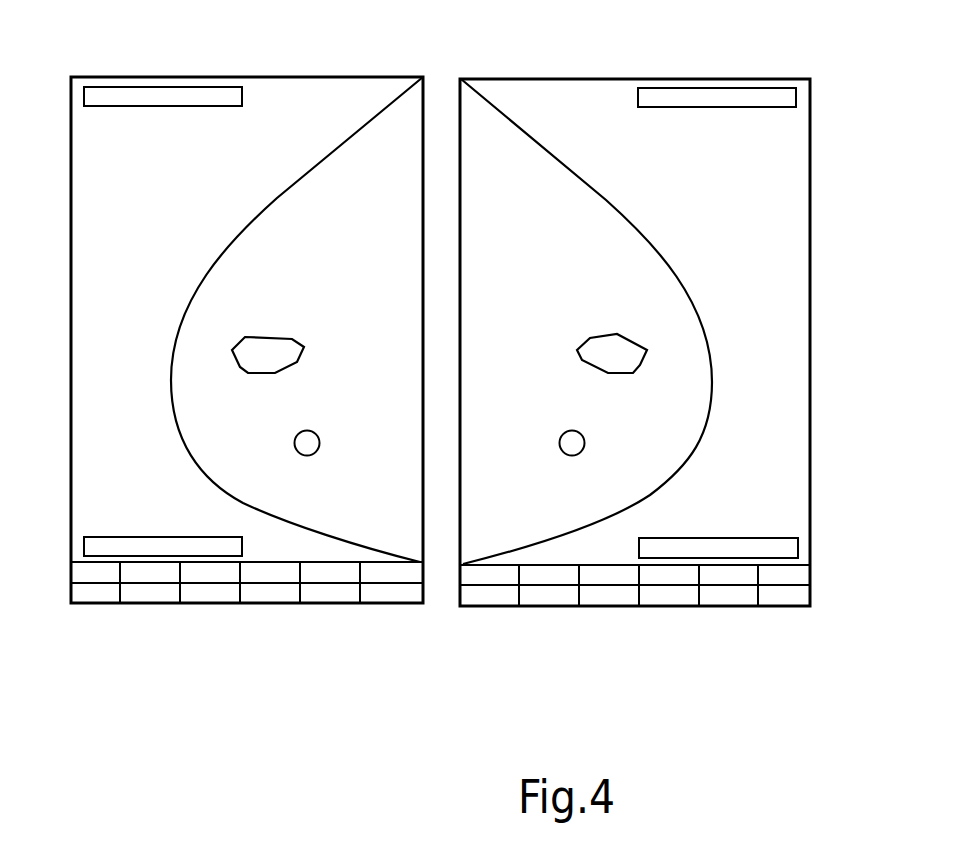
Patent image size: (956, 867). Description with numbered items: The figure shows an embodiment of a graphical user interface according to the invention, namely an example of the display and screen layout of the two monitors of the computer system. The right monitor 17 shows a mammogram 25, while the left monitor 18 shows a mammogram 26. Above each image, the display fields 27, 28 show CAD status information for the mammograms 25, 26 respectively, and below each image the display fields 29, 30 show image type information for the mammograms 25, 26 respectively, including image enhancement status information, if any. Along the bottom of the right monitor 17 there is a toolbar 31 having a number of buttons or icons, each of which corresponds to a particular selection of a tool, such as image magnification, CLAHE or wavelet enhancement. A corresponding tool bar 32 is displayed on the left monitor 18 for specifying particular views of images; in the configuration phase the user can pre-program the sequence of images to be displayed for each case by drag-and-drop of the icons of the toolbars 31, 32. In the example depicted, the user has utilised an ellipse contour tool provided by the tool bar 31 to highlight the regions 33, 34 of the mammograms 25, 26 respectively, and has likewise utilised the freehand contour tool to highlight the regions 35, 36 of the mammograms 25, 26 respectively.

The right monitor 17 is at (537, 79).
The left monitor 18 is at (283, 78).
The mammogram 25 is at (545, 150).
The mammogram 26 is at (323, 158).
The display field 27 is at (758, 88).
The display field 28 is at (123, 87).
The display field 29 is at (770, 538).
The display field 30 is at (92, 537).
The toolbar 31 is at (820, 585).
The tool bar 32 is at (64, 585).
The region 33 is at (583, 452).
The region 34 is at (317, 456).
The region 35 is at (627, 334).
The region 36 is at (277, 336).